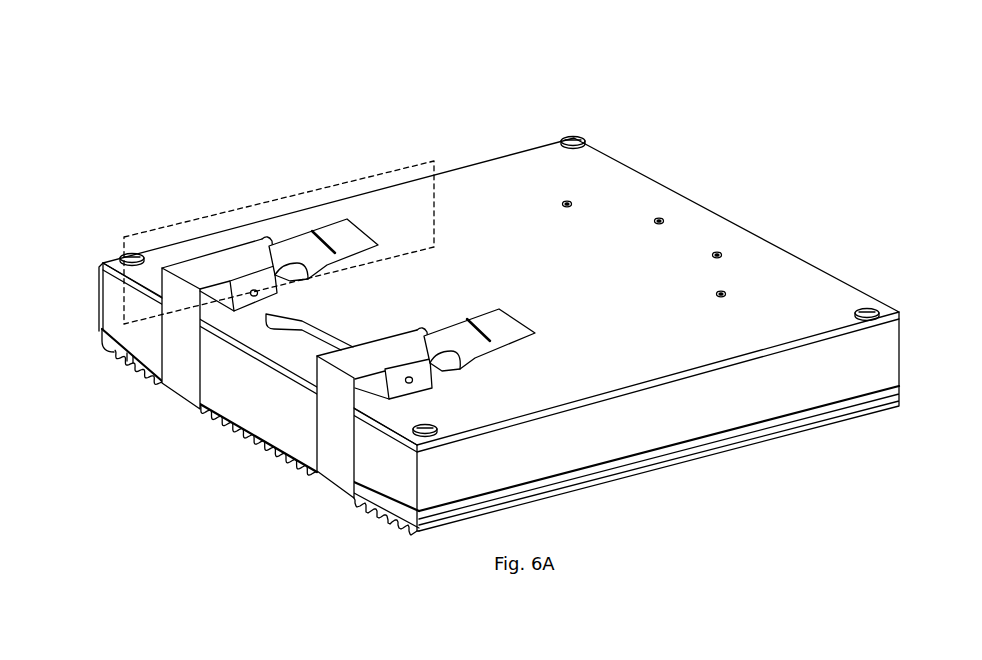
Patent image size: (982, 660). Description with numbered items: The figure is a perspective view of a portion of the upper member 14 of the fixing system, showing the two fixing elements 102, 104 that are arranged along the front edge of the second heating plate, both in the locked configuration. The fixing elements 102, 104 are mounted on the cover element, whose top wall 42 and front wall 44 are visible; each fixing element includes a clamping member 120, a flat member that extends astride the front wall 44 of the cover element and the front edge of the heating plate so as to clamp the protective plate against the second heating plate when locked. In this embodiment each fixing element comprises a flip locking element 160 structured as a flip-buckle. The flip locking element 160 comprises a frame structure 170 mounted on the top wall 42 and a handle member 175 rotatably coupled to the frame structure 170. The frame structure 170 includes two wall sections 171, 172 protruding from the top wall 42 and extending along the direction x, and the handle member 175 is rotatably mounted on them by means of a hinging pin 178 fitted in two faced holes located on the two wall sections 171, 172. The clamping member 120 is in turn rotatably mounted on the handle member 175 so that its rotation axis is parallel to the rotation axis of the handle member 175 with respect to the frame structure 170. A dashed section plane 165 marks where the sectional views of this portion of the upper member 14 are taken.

The upper member 14 is at (127, 143).
The top wall 42 is at (730, 233).
The front wall 44 is at (400, 470).
The fixing element 102 is at (160, 406).
The fixing element 104 is at (307, 510).
The clamping member 120 is at (163, 330).
The flip locking element 160 is at (341, 232).
The section plane 165 is at (430, 162).
The frame structure 170 is at (244, 333).
The wall section 171 is at (300, 320).
The wall section 172 is at (198, 250).
The handle member 175 is at (335, 228).
The hinging pin 178 is at (252, 292).